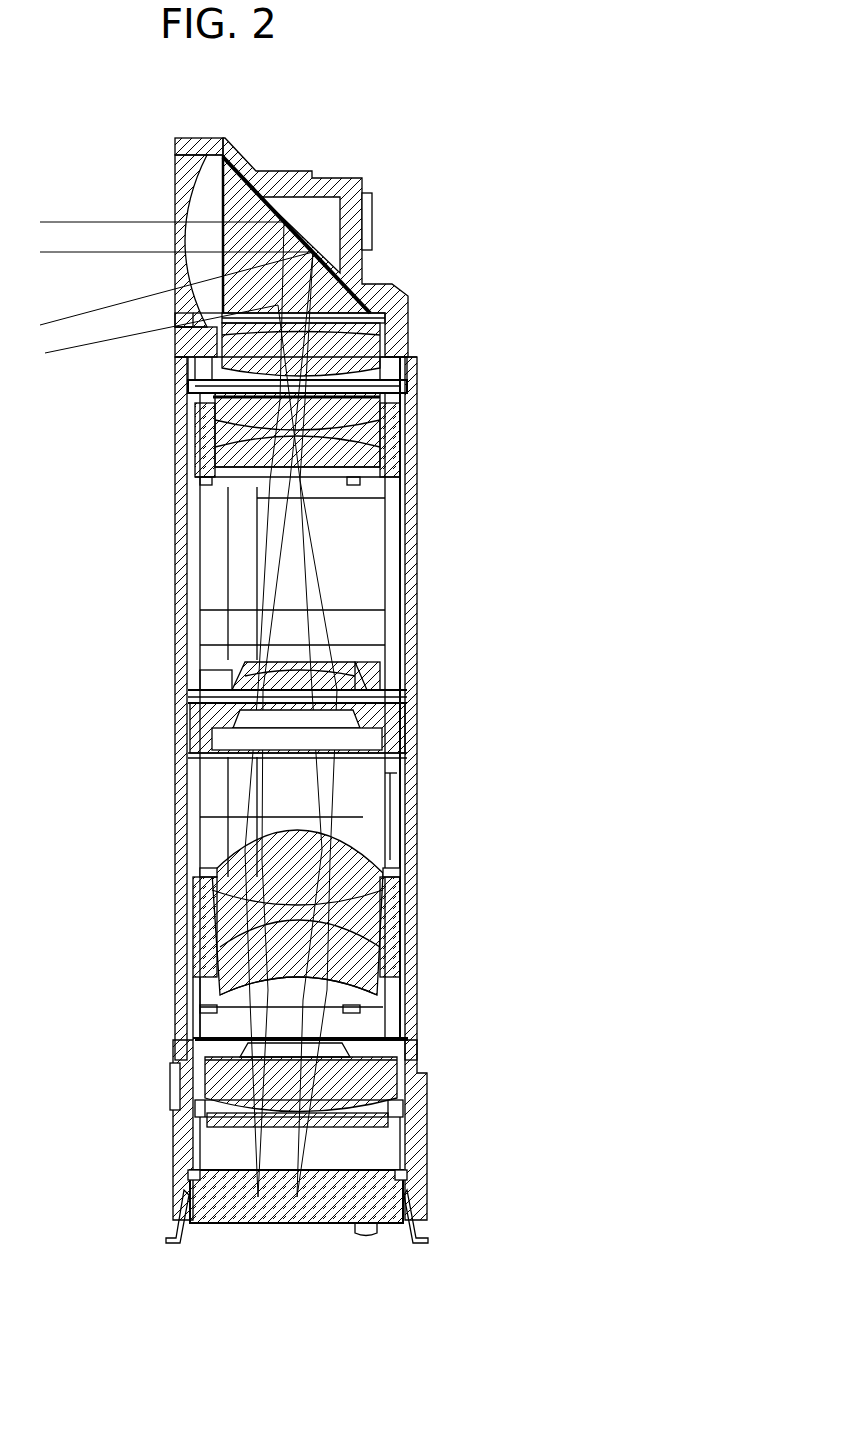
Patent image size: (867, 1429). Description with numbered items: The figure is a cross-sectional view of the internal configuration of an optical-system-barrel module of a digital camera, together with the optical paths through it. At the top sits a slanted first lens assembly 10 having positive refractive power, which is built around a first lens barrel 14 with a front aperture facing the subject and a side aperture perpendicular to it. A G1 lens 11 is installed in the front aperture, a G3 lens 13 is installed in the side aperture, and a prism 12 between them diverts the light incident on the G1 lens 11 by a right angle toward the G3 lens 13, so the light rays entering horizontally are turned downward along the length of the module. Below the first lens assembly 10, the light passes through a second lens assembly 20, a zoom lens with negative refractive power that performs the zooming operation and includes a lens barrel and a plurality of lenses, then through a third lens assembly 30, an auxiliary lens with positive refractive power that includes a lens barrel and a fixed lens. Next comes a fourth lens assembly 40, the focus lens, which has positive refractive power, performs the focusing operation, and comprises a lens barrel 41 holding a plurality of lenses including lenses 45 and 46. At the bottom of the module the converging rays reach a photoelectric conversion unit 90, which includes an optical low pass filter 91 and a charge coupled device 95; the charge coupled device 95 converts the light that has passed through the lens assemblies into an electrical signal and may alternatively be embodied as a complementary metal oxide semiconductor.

The first lens assembly 10 is at (437, 174).
The G1 lens 11 is at (223, 138).
The prism 12 is at (313, 230).
The G3 lens 13 is at (337, 333).
The first lens barrel 14 is at (287, 183).
The second lens assembly 20 is at (403, 422).
The third lens assembly 30 is at (398, 667).
The fourth lens assembly 40 is at (490, 878).
The lens barrel 41 is at (393, 938).
The lens 45 is at (407, 1038).
The lens 46 is at (383, 877).
The photoelectric conversion unit 90 is at (292, 1300).
The optical low pass filter 91 is at (218, 1128).
The charge coupled device 95 is at (277, 1213).